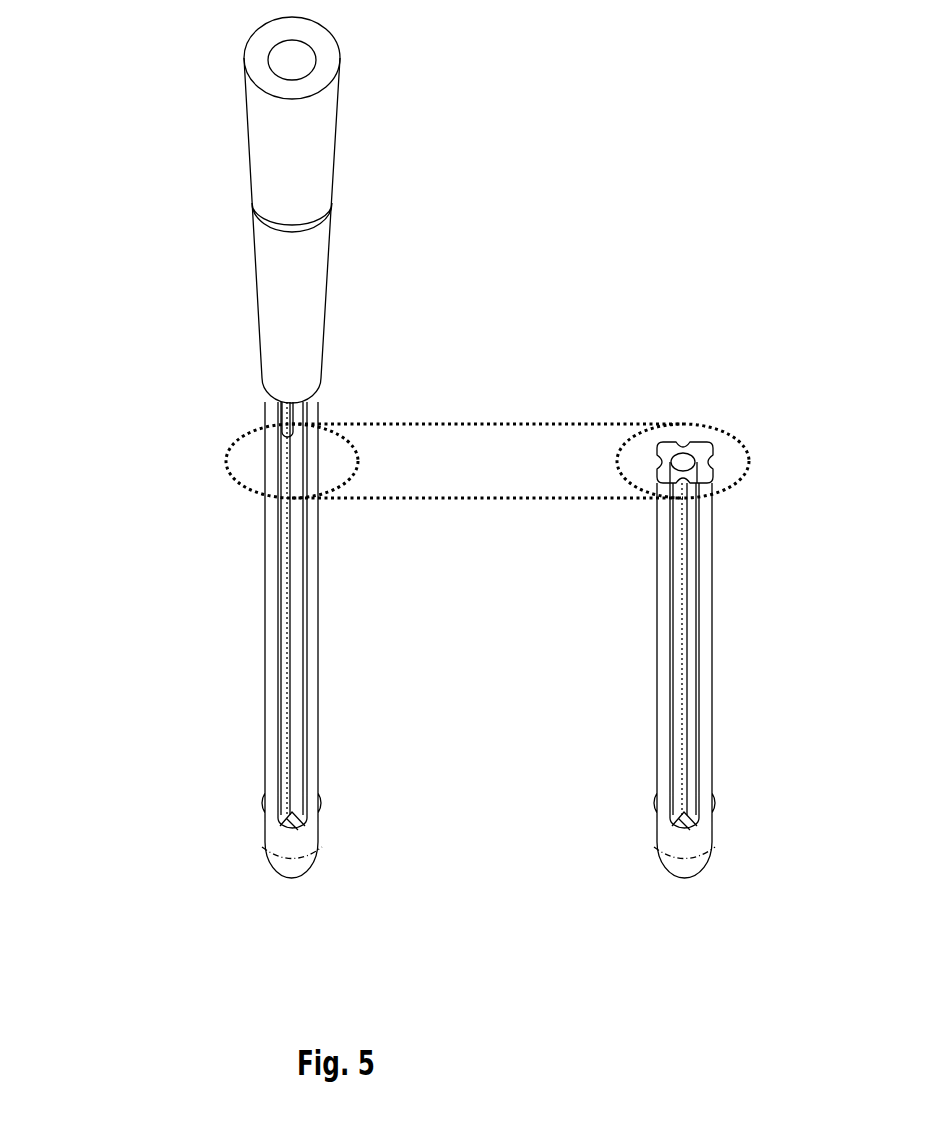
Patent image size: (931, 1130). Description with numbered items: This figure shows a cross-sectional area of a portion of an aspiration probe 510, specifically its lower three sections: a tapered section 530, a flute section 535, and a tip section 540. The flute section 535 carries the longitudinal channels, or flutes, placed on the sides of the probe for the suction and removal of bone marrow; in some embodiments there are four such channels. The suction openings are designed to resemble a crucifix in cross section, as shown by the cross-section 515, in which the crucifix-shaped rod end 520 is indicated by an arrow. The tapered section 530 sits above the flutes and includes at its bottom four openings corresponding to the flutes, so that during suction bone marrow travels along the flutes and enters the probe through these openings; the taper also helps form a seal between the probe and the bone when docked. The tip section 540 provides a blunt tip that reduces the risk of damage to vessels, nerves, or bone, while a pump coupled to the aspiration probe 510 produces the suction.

The aspiration probe 510 is at (307, 273).
The cross-section 515 is at (707, 428).
The cross-shaped rod end 520 is at (720, 472).
The tapered section 530 is at (192, 65).
The flute section 535 is at (192, 397).
The tip section 540 is at (192, 818).